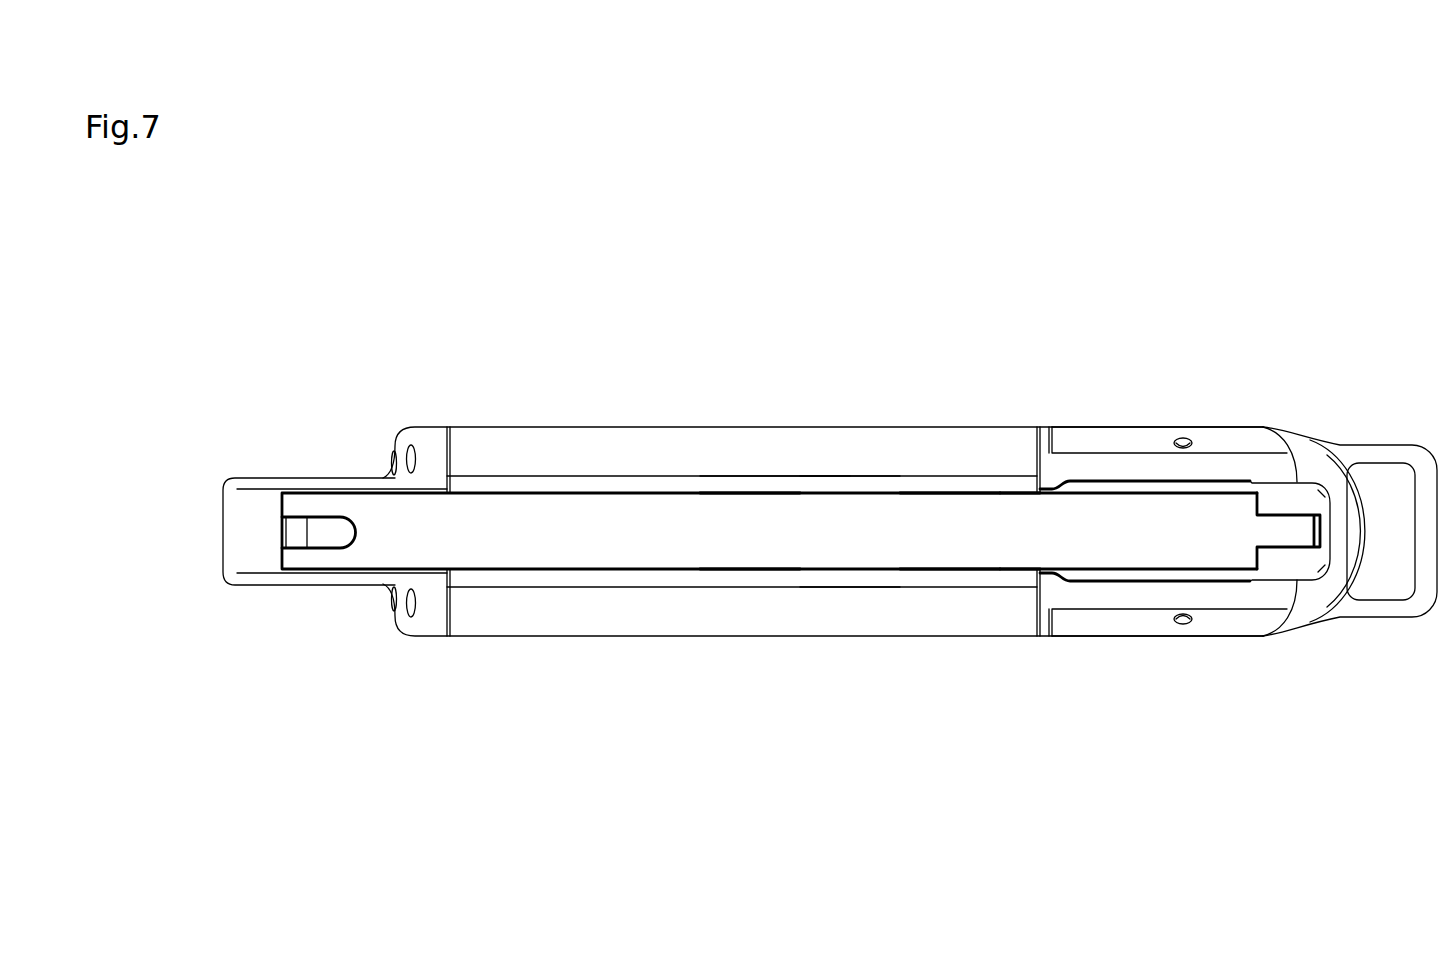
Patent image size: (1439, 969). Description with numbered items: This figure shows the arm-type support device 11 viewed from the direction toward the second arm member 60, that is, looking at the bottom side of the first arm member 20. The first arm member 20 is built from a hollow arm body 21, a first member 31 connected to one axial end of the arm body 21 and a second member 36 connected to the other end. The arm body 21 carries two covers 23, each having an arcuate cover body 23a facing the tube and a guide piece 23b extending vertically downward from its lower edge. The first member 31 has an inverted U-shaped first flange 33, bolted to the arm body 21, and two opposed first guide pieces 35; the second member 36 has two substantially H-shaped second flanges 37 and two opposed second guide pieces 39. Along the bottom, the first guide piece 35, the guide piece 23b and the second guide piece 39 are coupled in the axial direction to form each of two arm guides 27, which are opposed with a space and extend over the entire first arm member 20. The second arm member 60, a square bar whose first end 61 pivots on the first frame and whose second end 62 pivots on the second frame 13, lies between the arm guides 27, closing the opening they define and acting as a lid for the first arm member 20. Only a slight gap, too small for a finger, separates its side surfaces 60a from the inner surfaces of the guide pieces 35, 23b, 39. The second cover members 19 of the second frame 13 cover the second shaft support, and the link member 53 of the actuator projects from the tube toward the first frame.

The arm-type support device 11 is at (1106, 402).
The second frame 13 is at (1297, 438).
The second cover members 19 is at (1150, 440).
The first arm member 20 is at (612, 636).
The arm body 21 is at (583, 427).
The covers 23 is at (852, 393).
The cover body 23a is at (822, 455).
The guide piece 23b is at (748, 492).
The arm guides 27 is at (611, 481).
The first member 31 is at (436, 427).
The first flange 33 is at (438, 449).
The first guide pieces 35 is at (312, 478).
The second member 36 is at (1236, 427).
The second flanges 37 is at (1043, 427).
The second guide pieces 39 is at (1108, 472).
The link member 53 is at (305, 530).
The second arm member 60 is at (1003, 556).
The side surfaces 60a is at (945, 492).
The first end 61 is at (282, 560).
The second end 62 is at (1287, 533).